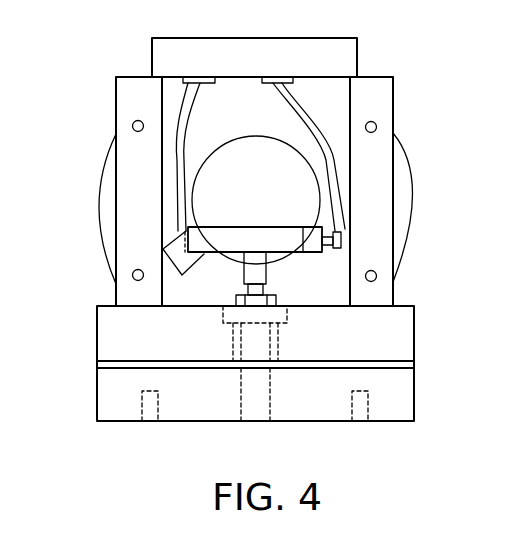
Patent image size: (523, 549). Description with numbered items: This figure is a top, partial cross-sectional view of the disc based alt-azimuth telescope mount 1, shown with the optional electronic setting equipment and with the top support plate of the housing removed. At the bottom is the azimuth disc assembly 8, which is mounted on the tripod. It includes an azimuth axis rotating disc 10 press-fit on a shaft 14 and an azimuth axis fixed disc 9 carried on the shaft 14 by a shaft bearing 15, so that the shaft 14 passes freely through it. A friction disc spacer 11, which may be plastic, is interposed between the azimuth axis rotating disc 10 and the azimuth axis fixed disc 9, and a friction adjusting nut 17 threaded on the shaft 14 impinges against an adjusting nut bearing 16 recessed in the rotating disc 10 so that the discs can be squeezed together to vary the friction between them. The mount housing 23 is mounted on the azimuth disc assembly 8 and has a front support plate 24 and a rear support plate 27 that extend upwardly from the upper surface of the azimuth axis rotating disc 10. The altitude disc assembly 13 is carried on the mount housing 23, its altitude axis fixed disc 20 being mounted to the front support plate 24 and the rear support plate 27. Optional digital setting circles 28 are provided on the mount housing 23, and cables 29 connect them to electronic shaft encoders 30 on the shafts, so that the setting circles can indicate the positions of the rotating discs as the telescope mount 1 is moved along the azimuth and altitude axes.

The telescope mount 1 is at (233, 154).
The azimuth disc assembly 8 is at (228, 348).
The azimuth axis fixed disc 9 is at (387, 415).
The azimuth axis rotating disc 10 is at (105, 325).
The friction disc spacer 11 is at (96, 366).
The altitude disc assembly 13 is at (224, 190).
The shaft 14 is at (237, 403).
The shaft bearing 15 is at (233, 342).
The adjusting nut bearing 16 is at (290, 313).
The friction adjusting nut 17 is at (237, 298).
The altitude axis fixed disc 20 is at (100, 188).
The mount housing 23 is at (233, 176).
The front support plate 24 is at (128, 78).
The rear support plate 27 is at (382, 78).
The digital setting circles 28 is at (308, 48).
The cables 29 is at (282, 100).
The electronic shaft encoders 30 is at (302, 218).